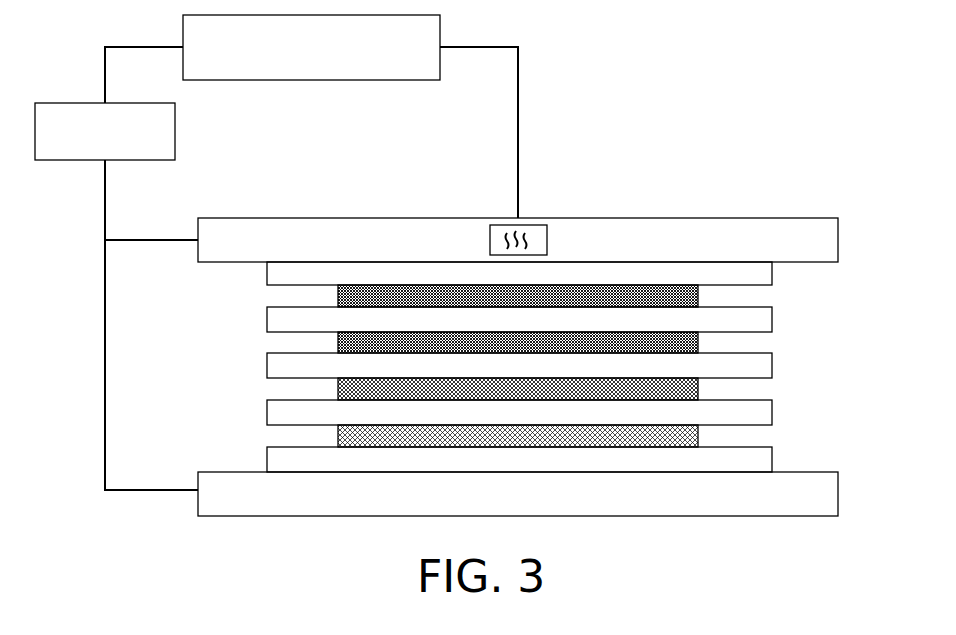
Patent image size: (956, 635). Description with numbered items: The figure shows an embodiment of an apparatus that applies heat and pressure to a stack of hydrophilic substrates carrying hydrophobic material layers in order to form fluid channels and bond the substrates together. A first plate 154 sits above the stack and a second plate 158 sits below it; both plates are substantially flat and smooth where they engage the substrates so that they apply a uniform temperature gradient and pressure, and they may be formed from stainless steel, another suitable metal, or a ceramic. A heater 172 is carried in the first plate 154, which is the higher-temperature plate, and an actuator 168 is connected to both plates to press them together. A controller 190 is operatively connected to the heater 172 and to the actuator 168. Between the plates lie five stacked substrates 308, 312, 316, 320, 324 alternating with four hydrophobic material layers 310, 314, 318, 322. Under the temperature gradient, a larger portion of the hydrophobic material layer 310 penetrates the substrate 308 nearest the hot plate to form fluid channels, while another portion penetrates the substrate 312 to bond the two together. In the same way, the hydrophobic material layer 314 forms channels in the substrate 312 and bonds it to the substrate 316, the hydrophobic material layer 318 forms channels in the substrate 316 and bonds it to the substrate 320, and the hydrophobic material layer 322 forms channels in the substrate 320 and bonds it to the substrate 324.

The first plate 154 is at (653, 218).
The second plate 158 is at (522, 517).
The actuator 168 is at (175, 130).
The heater 172 is at (500, 225).
The controller 190 is at (312, 80).
The substrate 308 is at (267, 277).
The hydrophobic material layer 310 is at (700, 297).
The substrate 312 is at (267, 322).
The hydrophobic material layer 314 is at (700, 342).
The substrate 316 is at (267, 366).
The hydrophobic material layer 318 is at (700, 388).
The substrate 320 is at (267, 411).
The hydrophobic material layer 322 is at (700, 434).
The substrate 324 is at (267, 460).